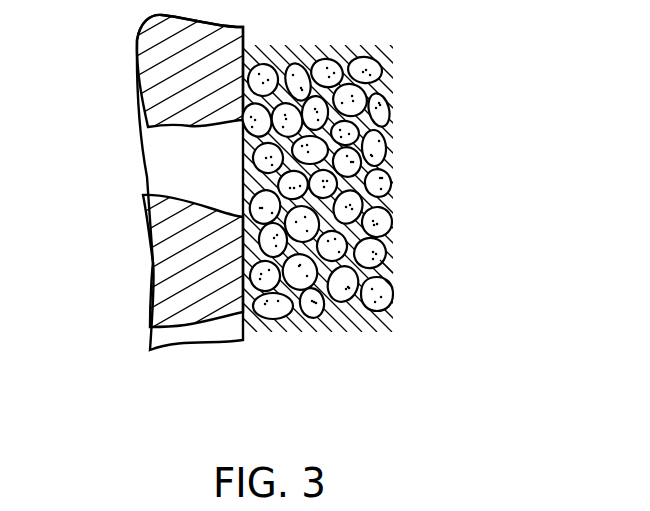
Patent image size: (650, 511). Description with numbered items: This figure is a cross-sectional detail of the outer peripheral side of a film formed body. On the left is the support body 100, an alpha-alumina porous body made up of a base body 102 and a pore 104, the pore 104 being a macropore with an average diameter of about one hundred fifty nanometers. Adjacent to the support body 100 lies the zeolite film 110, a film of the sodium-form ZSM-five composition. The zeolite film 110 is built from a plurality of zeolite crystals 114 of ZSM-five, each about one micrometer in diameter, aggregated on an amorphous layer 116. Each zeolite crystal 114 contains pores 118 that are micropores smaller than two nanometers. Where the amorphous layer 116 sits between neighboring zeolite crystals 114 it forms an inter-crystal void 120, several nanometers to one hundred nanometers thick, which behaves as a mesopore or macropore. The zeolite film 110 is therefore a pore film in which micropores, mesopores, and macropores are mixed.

The support body 100 is at (139, 200).
The base body 102 is at (148, 107).
The pore 104 is at (163, 168).
The zeolite film 110 is at (325, 238).
The zeolite crystals 114 is at (289, 323).
The amorphous layer 116 is at (346, 323).
The pores 118 is at (395, 292).
The inter-crystal void 120 is at (386, 272).